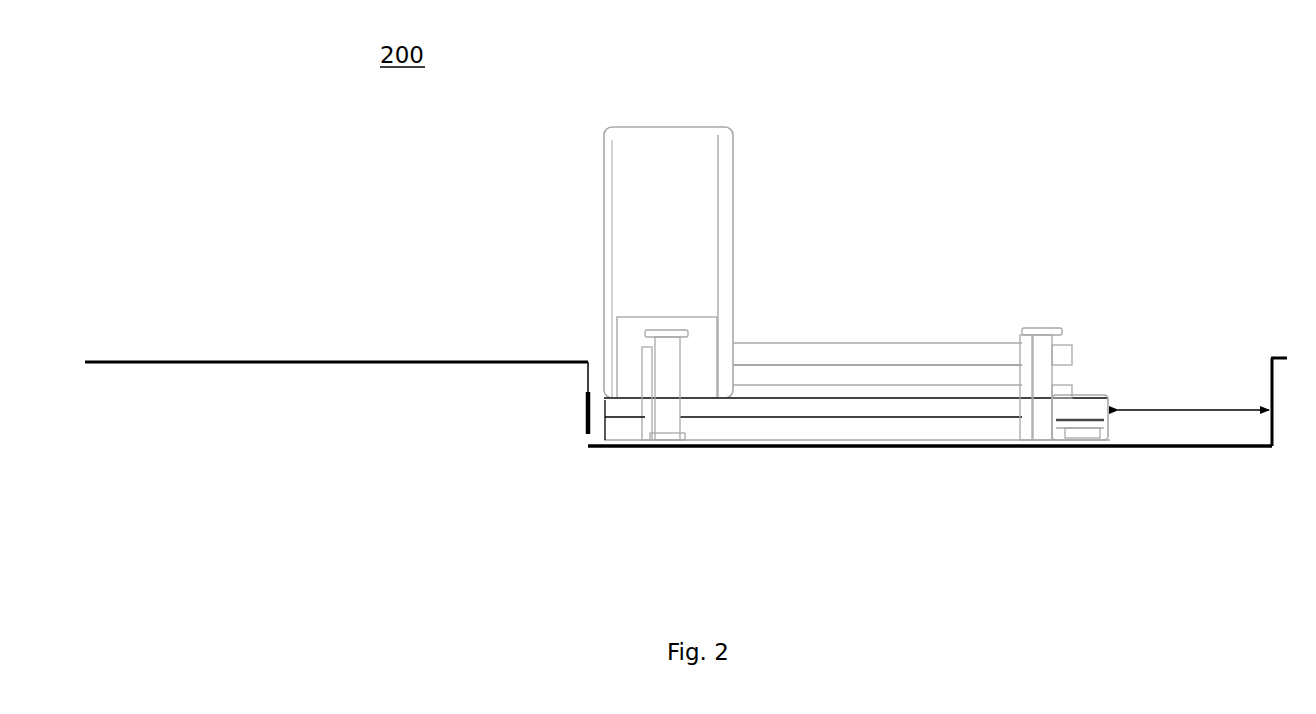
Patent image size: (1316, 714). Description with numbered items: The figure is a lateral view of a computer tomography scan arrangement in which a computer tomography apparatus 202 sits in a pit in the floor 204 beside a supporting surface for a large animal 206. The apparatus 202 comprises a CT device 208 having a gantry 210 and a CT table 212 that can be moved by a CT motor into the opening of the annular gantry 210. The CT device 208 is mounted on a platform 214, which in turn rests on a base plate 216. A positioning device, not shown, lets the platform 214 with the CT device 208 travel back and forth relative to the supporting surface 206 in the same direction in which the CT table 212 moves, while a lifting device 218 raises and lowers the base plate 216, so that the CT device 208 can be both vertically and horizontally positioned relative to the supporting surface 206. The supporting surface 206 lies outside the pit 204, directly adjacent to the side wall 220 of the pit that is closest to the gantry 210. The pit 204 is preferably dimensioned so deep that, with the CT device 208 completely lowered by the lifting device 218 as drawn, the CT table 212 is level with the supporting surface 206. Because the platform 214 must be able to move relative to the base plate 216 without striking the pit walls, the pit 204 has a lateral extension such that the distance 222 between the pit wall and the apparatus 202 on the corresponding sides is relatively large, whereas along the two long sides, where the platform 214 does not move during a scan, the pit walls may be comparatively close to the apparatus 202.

The computer tomography apparatus 202 is at (957, 193).
The pit in the floor 204 is at (878, 460).
The supporting surface for a large animal 206 is at (313, 350).
The CT device 208 is at (772, 285).
The gantry 210 is at (656, 160).
The CT table 212 is at (900, 340).
The platform 214 is at (1083, 398).
The base plate 216 is at (611, 436).
The lifting device 218 is at (665, 432).
The side wall of the pit 220 is at (580, 412).
The distance 222 is at (1181, 400).